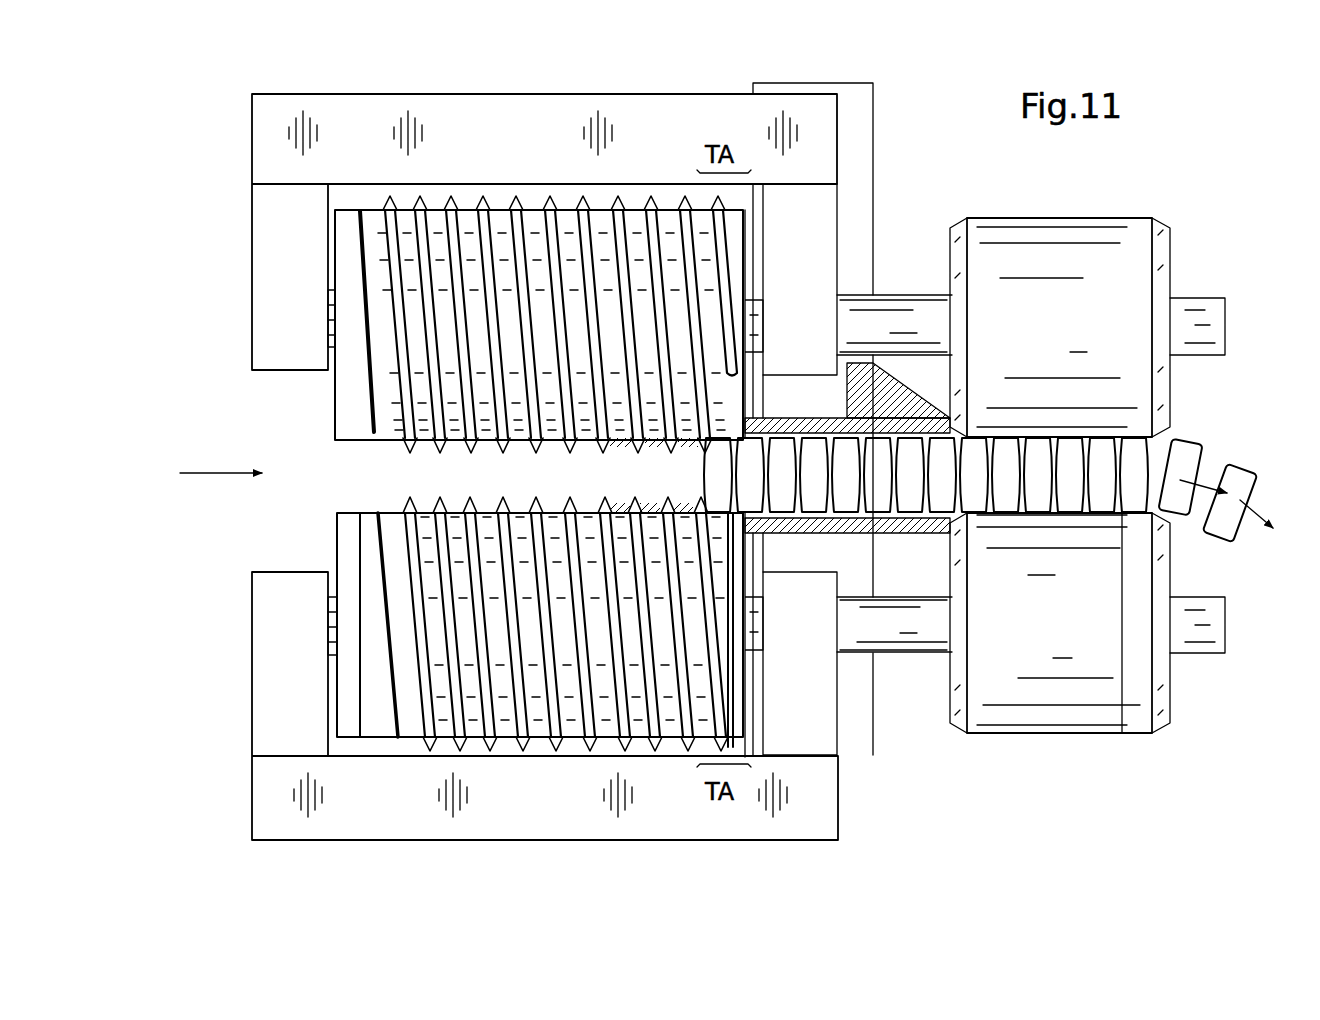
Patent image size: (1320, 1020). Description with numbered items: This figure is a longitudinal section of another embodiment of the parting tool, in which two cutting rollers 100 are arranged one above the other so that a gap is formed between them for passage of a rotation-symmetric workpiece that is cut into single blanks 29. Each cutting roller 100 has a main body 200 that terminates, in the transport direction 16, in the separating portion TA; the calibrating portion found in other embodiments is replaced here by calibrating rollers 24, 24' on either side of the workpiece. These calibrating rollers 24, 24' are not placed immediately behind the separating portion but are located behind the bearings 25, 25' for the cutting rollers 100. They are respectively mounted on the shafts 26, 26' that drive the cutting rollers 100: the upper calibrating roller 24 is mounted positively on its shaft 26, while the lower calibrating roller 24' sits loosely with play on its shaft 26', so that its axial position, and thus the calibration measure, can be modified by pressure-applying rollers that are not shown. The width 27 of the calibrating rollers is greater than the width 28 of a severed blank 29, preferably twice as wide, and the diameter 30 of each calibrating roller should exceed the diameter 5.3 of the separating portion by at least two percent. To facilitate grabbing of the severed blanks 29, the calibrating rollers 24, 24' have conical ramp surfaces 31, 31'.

The main body 200 is at (376, 266).
The cutting roller 100 is at (705, 260).
The diameter of the separating portion 5.3 is at (735, 650).
The bearing 25 is at (847, 419).
The bearing 25' is at (860, 704).
The shaft 26 is at (1052, 328).
The shaft 26' is at (1059, 623).
The calibrating roller 24 is at (1079, 306).
The calibrating roller 24' is at (1104, 623).
The conical ramp surface 31 is at (974, 303).
The conical ramp surface 31' is at (1081, 646).
The diameter of the calibrating roller 30 is at (1123, 678).
The width of the calibrating rollers 27 is at (1152, 808).
The blank 29 is at (1133, 453).
The width of the severed blank 28 is at (1182, 548).
The transport direction 16 is at (210, 473).